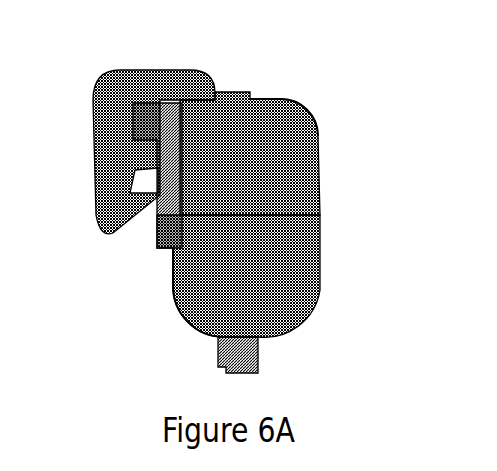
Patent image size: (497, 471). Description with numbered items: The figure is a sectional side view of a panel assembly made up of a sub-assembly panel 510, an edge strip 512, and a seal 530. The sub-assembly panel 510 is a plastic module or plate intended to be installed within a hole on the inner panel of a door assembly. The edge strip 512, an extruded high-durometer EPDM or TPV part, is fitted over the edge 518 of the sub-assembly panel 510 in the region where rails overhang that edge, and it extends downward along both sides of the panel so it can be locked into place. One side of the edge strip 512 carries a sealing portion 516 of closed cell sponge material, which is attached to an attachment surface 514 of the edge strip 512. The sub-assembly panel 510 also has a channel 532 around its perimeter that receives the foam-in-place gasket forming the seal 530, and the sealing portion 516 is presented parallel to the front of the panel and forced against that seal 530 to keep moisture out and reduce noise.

The sub-assembly panel 510 is at (258, 345).
The edge strip 512 is at (123, 71).
The attachment surface 514 is at (317, 125).
The sealing portion 516 is at (283, 110).
The edge 518 is at (165, 98).
The seal 530 is at (323, 273).
The channel 532 is at (170, 280).